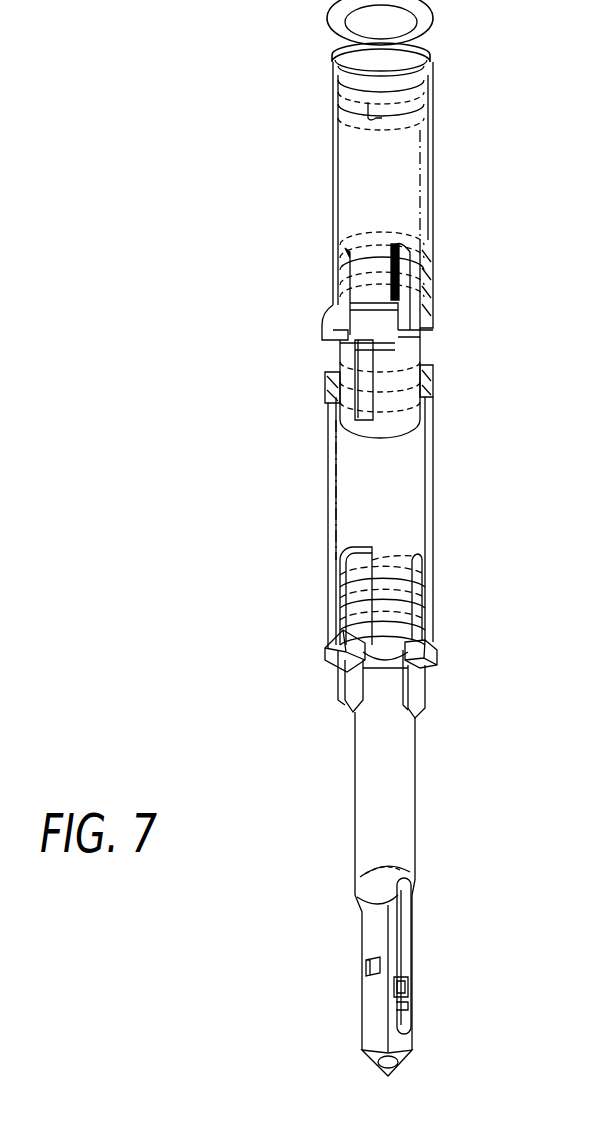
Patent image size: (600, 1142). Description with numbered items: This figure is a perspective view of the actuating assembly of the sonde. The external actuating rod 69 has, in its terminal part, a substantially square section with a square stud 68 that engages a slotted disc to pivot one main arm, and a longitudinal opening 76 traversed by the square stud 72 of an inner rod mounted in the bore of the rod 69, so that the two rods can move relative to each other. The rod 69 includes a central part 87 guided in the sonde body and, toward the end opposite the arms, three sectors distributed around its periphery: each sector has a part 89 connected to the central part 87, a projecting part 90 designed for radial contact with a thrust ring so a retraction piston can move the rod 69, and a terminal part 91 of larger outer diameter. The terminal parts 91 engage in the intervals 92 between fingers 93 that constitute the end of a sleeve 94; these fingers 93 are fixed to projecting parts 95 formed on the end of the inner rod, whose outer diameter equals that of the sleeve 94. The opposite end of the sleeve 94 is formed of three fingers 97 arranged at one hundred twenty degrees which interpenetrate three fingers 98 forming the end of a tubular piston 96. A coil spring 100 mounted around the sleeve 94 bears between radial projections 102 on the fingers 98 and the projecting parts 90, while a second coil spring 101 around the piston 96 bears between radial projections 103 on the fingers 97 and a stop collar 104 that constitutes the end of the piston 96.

The stop collar 104 is at (428, 82).
The second coil spring 101 is at (432, 183).
The tubular piston 96 is at (362, 172).
The fingers of the piston 98 is at (362, 282).
The radial projections 103 is at (428, 318).
The fingers of the sleeve 97 is at (415, 350).
The radial projections 102 is at (352, 345).
The coil spring 100 is at (432, 500).
The sleeve 94 is at (360, 485).
The intervals 92 is at (420, 578).
The fingers 93 is at (362, 598).
The terminal part 91 is at (423, 620).
The projecting parts 95 is at (340, 645).
The projecting part 90 is at (437, 660).
The part connected to the central part 89 is at (422, 705).
The central part 87 is at (370, 776).
The actuating rod 69 is at (370, 858).
The longitudinal opening 76 is at (405, 950).
The square stud 68 is at (370, 960).
The square stud 72 is at (403, 990).